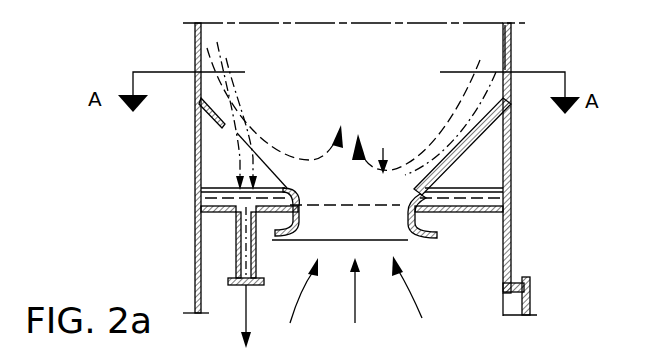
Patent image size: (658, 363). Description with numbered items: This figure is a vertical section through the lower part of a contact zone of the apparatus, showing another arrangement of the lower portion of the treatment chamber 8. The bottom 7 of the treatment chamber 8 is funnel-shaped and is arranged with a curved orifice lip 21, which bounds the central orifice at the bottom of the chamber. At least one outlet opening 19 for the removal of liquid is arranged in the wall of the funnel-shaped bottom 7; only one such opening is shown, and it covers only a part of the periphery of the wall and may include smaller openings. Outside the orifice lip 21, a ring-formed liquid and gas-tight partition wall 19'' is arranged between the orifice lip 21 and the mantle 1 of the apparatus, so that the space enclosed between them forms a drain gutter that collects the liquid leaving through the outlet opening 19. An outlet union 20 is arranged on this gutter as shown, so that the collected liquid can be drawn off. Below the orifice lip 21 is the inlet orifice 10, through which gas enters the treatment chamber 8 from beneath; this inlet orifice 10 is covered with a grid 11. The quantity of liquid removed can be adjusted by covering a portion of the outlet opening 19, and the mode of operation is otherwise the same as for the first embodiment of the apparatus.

The mantle 1 is at (505, 195).
The bottom 7 is at (460, 152).
The treatment chamber 8 is at (383, 39).
The inlet orifice 10 is at (552, 294).
The grid 11 is at (345, 207).
The outlet opening 19 is at (238, 139).
The partition wall 19'' is at (208, 221).
The outlet union 20 is at (240, 263).
The orifice lip 21 is at (393, 232).